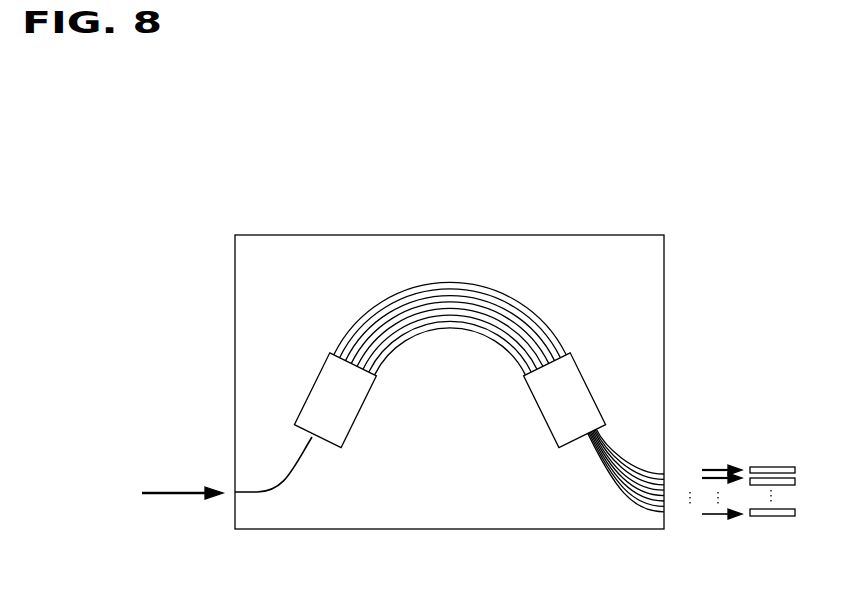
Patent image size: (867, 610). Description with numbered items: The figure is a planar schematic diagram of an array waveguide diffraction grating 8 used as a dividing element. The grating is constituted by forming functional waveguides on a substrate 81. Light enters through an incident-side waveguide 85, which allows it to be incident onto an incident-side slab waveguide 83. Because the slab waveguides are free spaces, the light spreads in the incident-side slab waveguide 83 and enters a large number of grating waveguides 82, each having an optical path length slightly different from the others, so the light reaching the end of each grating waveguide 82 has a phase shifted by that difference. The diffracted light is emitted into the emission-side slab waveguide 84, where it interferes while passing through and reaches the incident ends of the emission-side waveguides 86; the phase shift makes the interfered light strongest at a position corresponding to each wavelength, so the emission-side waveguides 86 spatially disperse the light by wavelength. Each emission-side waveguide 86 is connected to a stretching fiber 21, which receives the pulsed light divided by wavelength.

The array waveguide diffraction grating 8 is at (236, 207).
The substrate 81 is at (418, 530).
The grating waveguides 82 is at (474, 297).
The incident-side slab waveguide 83 is at (302, 400).
The emission-side slab waveguide 84 is at (588, 383).
The incident-side waveguide 85 is at (258, 493).
The emission-side waveguides 86 is at (632, 470).
The stretching fiber 21 is at (786, 478).